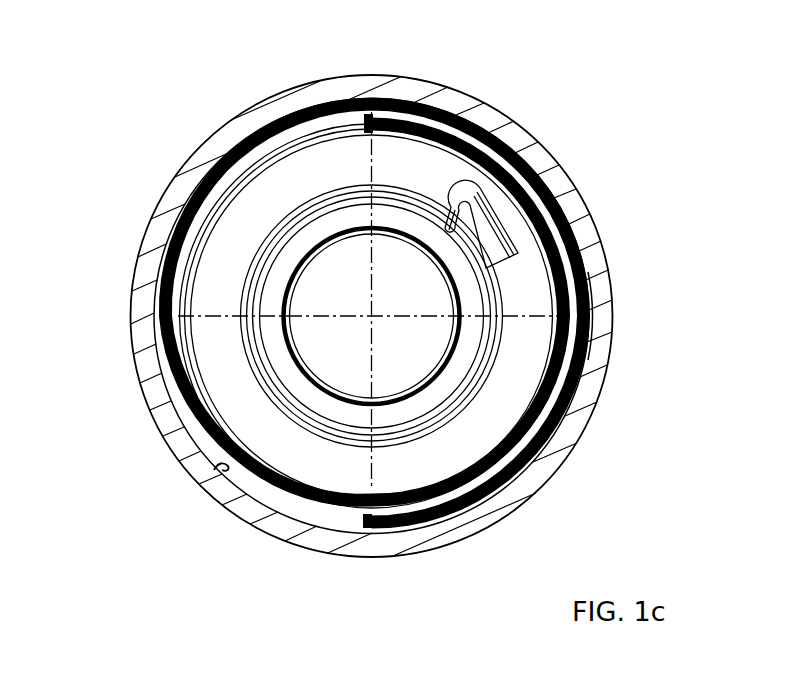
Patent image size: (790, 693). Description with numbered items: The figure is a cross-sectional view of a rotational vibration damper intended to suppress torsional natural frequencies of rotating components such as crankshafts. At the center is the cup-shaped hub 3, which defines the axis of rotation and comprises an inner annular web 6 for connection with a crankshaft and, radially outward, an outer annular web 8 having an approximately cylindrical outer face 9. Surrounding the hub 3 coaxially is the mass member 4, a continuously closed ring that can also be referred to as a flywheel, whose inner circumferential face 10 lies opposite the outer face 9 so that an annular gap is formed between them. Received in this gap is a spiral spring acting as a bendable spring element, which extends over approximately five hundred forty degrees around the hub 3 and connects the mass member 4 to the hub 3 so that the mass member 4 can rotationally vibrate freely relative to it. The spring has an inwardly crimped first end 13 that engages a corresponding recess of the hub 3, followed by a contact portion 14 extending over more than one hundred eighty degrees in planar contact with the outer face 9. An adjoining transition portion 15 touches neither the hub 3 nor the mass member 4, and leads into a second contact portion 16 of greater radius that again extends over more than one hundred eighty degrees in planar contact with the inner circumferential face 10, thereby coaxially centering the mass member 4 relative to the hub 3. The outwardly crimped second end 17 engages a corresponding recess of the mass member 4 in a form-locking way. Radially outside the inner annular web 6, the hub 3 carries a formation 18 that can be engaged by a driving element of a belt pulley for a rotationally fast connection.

The hub 3 is at (223, 238).
The mass member 4 is at (167, 442).
The inner annular web 6 is at (447, 362).
The outer annular web 8 is at (300, 145).
The outer face 9 is at (266, 150).
The inner circumferential face 10 is at (220, 470).
The first end 13 is at (368, 120).
The contact portion 14 is at (565, 263).
The transition portion 15 is at (163, 345).
The second contact portion 16 is at (588, 327).
The second end 17 is at (370, 533).
The formation 18 is at (492, 226).